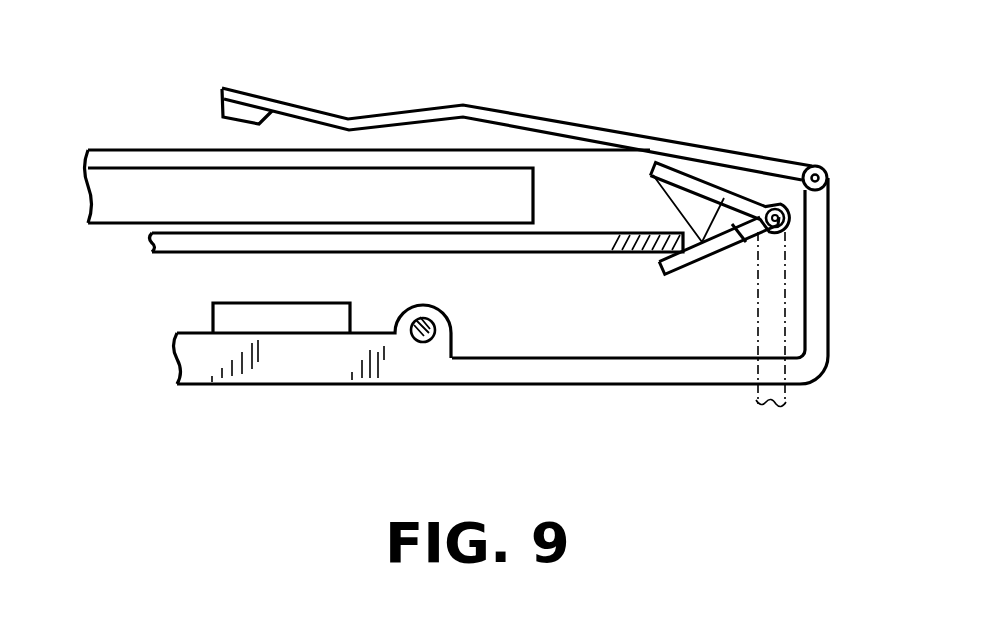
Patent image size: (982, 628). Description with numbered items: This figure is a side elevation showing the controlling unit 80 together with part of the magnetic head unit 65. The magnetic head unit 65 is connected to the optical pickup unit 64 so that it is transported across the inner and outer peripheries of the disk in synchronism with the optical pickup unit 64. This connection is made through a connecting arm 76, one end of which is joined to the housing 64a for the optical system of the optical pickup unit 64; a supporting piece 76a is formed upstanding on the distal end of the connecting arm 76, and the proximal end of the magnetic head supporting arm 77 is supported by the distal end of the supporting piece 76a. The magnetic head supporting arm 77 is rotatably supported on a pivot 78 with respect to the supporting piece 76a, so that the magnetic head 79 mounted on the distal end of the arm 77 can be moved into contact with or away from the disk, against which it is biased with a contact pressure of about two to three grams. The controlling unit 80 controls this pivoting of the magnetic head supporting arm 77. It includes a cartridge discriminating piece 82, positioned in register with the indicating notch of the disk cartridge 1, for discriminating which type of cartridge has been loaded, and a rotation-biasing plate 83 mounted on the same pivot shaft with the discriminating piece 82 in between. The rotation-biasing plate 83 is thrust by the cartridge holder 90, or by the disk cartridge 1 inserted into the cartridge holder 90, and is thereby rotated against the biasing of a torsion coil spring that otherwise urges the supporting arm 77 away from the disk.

The disk cartridge 1 is at (107, 178).
The magnetic head supporting arm 77 is at (618, 130).
The magnetic head 79 is at (242, 99).
The magnetic head unit 65 is at (793, 160).
The pivot 78 is at (827, 176).
The supporting piece 76a is at (830, 268).
The connecting arm 76 is at (613, 375).
The cartridge holder 90 is at (490, 253).
The controlling unit 80 is at (720, 185).
The cartridge discriminating piece 82 is at (683, 187).
The rotation-biasing plate 83 is at (707, 255).
The optical pickup unit 64 is at (223, 320).
The housing 64a is at (342, 375).